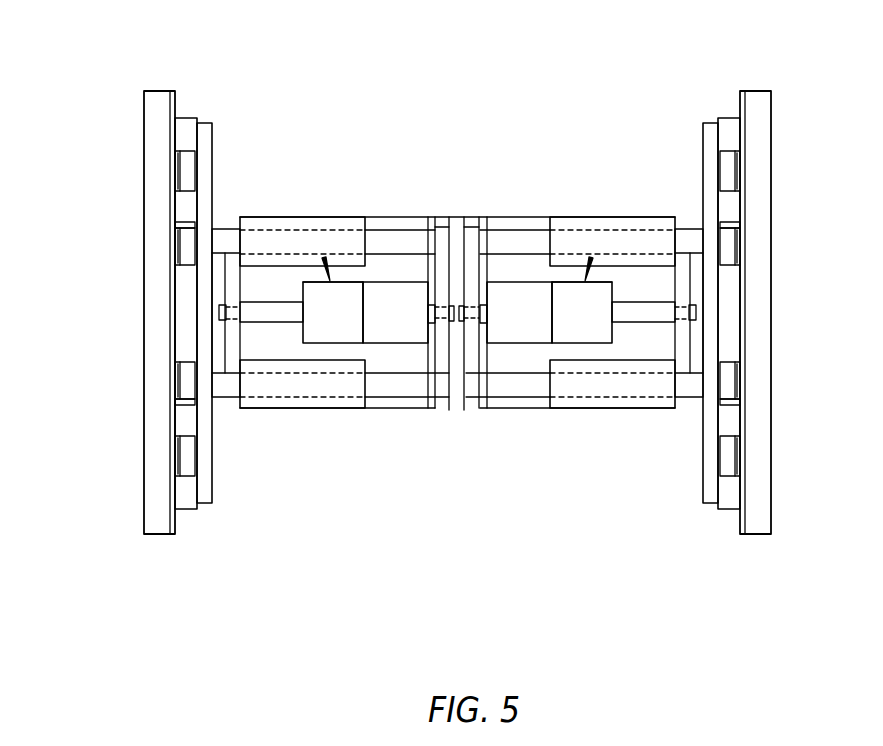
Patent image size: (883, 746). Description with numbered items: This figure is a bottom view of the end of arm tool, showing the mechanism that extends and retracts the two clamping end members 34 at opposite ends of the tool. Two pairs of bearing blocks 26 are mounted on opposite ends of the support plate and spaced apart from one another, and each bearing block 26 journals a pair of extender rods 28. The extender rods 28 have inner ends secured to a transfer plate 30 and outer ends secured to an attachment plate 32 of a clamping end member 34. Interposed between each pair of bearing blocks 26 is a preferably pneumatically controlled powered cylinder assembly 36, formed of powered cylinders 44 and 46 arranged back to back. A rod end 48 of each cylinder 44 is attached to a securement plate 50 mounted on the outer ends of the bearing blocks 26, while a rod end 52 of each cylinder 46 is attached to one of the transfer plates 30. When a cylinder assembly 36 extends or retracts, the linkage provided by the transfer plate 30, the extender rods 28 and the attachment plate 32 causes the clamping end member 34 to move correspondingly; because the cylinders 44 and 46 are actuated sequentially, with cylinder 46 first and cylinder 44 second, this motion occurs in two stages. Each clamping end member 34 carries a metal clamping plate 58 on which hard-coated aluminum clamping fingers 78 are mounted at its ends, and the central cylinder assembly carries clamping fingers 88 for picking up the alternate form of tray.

The bearing block 26 is at (283, 240).
The extender rod 28 is at (388, 230).
The transfer plate 30 is at (472, 393).
The attachment plate 32 is at (208, 122).
The clamping end member 34 is at (157, 523).
The powered cylinder assembly 36 is at (324, 262).
The powered cylinder 44 is at (322, 322).
The powered cylinder 46 is at (403, 298).
The rod end 48 is at (268, 318).
The securement plate 50 is at (235, 260).
The rod end 52 is at (440, 297).
The clamping plate 58 is at (158, 148).
The clamping finger 78 is at (185, 145).
The clamping finger 88 is at (187, 378).